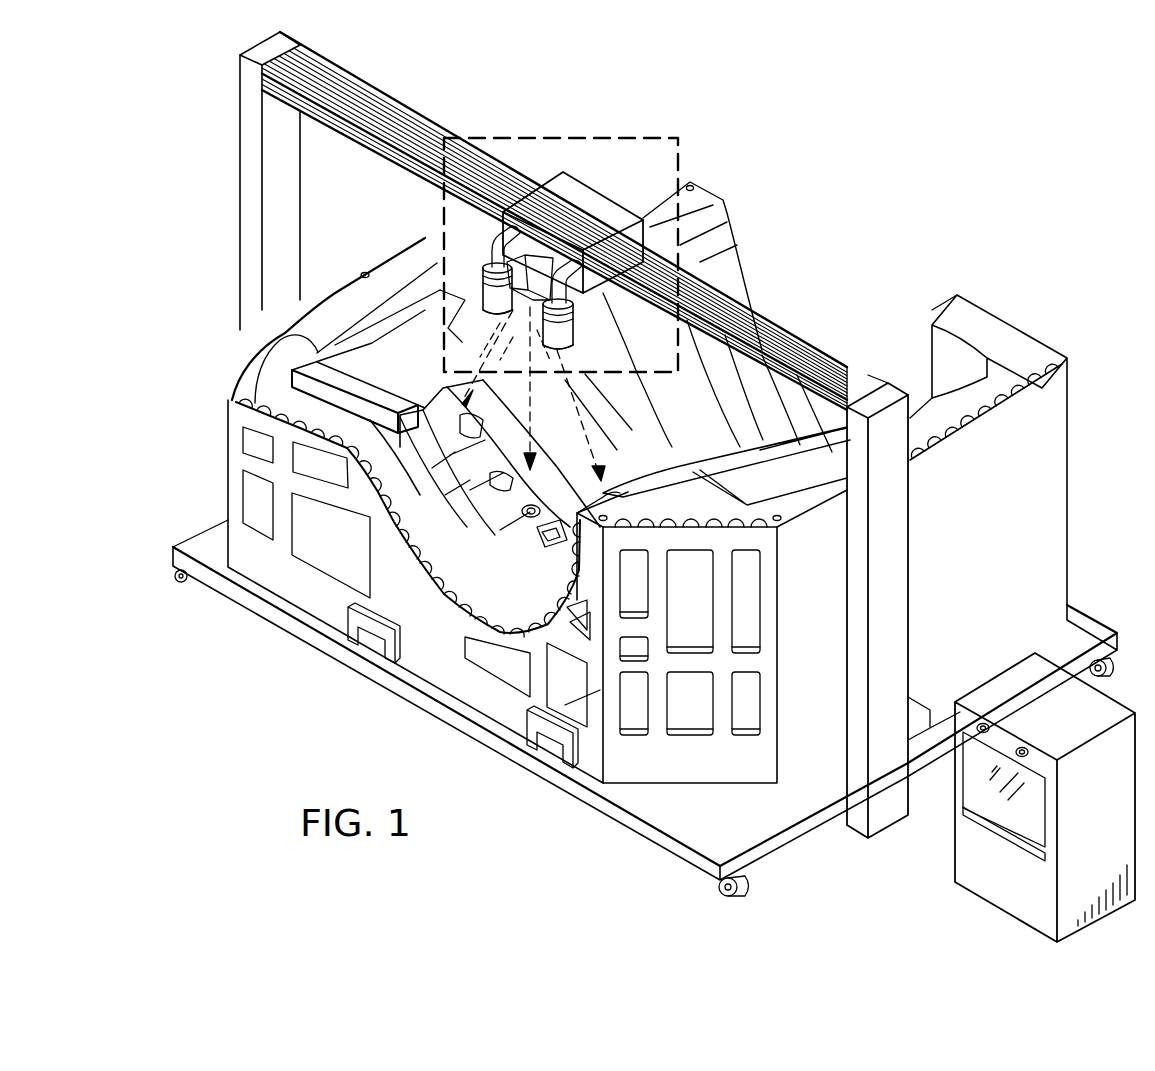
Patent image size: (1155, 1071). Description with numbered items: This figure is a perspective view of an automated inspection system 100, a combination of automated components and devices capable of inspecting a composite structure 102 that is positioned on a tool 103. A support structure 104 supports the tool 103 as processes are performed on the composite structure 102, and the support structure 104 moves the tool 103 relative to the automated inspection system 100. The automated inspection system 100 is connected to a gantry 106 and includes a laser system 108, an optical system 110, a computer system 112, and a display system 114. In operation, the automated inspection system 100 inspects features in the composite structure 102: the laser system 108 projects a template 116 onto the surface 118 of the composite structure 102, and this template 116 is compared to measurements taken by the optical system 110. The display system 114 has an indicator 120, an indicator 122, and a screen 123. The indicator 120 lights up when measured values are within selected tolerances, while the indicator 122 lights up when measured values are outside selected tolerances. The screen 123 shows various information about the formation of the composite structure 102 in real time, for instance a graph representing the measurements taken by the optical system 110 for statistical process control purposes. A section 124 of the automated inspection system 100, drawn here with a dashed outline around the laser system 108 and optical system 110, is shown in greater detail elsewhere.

The automated inspection system 100 is at (928, 160).
The composite structure 102 is at (527, 555).
The tool 103 is at (300, 338).
The support structure 104 is at (706, 770).
The gantry 106 is at (905, 586).
The laser system 108 is at (538, 255).
The optical system 110 is at (483, 255).
The computer system 112 is at (980, 872).
The display system 114 is at (1028, 813).
The template 116 is at (608, 422).
The surface 118 is at (510, 513).
The indicator 120 is at (1027, 748).
The indicator 122 is at (987, 724).
The screen 123 is at (973, 794).
The section 124 is at (588, 138).